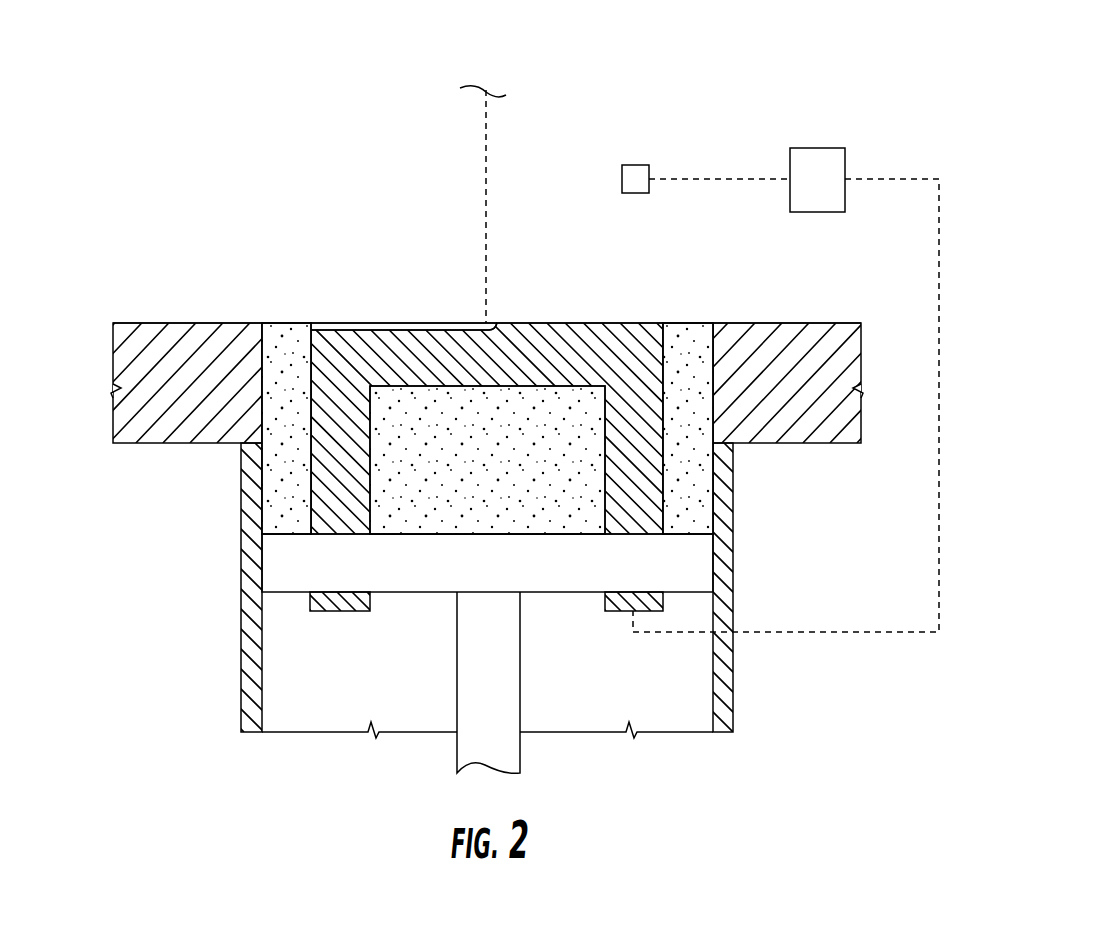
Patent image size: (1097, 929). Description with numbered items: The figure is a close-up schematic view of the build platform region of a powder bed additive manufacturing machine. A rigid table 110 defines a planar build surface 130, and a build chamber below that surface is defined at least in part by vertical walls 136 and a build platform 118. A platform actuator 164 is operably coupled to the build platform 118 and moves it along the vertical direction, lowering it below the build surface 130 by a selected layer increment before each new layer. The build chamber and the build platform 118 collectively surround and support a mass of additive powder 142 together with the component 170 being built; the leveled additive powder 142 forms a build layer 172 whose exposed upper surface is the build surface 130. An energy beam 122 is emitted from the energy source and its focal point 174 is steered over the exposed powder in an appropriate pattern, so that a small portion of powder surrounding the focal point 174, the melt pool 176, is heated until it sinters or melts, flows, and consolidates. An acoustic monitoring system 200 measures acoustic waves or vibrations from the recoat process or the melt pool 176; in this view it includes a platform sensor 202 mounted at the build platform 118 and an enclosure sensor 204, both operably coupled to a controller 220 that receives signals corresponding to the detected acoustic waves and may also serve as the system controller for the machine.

The acoustic monitoring system 200 is at (761, 320).
The enclosure sensor 204 is at (634, 165).
The controller 220 is at (817, 180).
The energy beam 122 is at (486, 126).
The planar build surface 130 is at (486, 359).
The table 110 is at (125, 405).
The component 170 is at (488, 392).
The build layer 172 is at (346, 330).
The focal point 174 is at (487, 322).
The melt pool 176 is at (476, 323).
The additive powder 142 is at (487, 428).
The build platform 118 is at (487, 563).
The vertical walls 136 is at (727, 571).
The platform sensor 202 is at (348, 611).
The platform actuator 164 is at (513, 680).